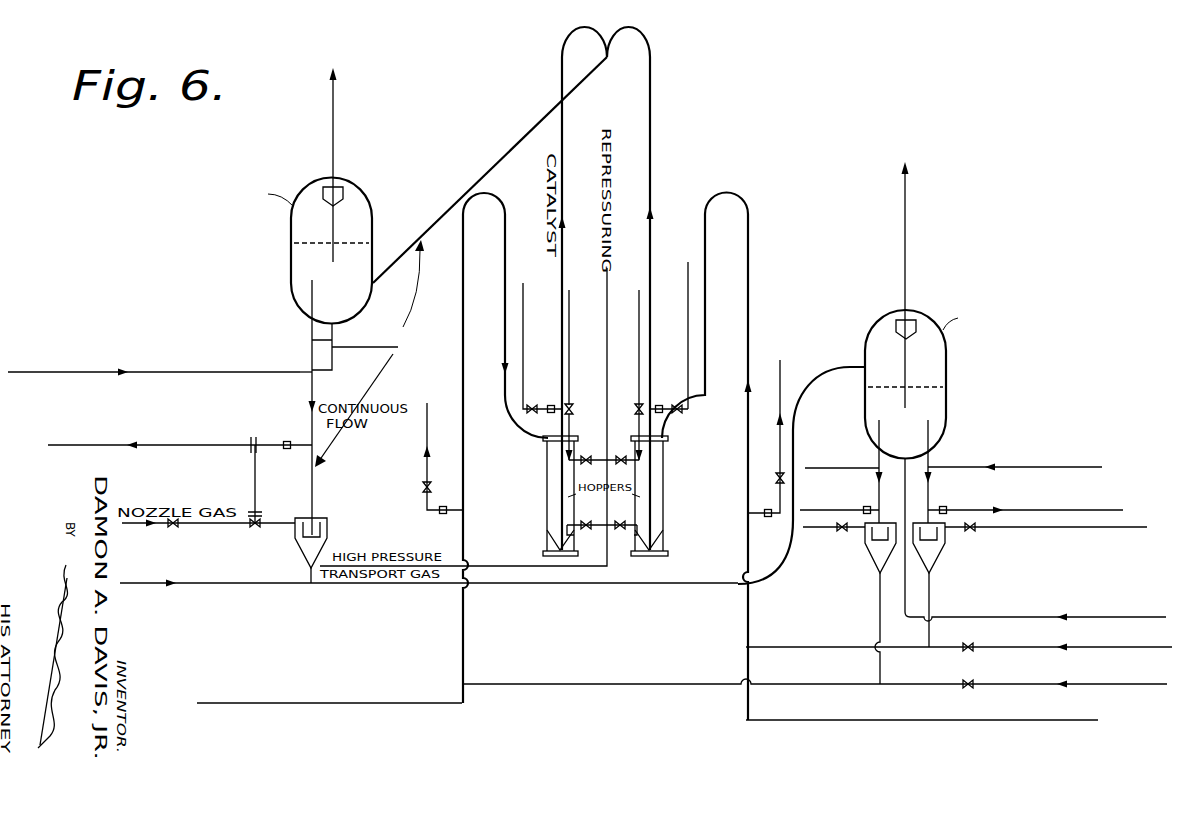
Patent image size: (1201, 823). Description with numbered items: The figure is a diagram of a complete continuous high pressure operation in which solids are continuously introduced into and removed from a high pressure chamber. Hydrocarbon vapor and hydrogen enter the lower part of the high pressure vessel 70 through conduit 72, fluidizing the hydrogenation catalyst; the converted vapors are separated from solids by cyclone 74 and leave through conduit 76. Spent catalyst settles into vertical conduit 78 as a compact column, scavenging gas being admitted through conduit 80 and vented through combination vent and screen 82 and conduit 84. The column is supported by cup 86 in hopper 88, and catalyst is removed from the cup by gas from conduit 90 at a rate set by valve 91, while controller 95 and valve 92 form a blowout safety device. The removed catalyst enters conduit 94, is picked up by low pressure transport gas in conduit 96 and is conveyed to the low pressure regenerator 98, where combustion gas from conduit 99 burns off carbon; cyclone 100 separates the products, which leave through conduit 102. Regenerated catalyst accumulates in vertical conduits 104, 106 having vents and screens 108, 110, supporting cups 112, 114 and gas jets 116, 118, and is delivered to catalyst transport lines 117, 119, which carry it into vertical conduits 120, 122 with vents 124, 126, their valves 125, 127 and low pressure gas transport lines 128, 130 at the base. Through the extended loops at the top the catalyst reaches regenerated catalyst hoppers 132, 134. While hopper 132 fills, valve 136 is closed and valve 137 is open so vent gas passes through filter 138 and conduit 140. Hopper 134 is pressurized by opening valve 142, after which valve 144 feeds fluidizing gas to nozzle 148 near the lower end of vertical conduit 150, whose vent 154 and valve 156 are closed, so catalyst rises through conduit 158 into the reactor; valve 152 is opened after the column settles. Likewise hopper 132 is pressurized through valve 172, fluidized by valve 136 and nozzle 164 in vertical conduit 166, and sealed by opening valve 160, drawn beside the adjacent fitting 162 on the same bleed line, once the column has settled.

The high pressure vessel 70 is at (291, 221).
The conduit 72 is at (204, 374).
The cyclone 74 is at (343, 195).
The conduit 76 is at (334, 131).
The vertical conduit 78 is at (313, 374).
The conduit 80 is at (399, 349).
The combination vent and screen 82 is at (278, 460).
The conduit 84 is at (176, 447).
The cup 86 is at (327, 524).
The hopper 88 is at (298, 551).
The conduit 90 is at (271, 521).
The valve 91 is at (170, 528).
The valve 92 is at (251, 528).
The conduit 94 is at (300, 575).
The controller 95 is at (256, 437).
The conduit 96 is at (429, 594).
The low pressure regenerator 98 is at (947, 356).
The conduit 99 is at (908, 466).
The cyclone 100 is at (908, 318).
The conduit 102 is at (906, 230).
The vertical conduit 104 is at (877, 452).
The vertical conduit 106 is at (931, 452).
The vent and screen 108 is at (874, 505).
The vent and screen 110 is at (946, 506).
The supporting cup 112 is at (866, 548).
The supporting cup 114 is at (944, 548).
The gas jet 116 is at (848, 525).
The catalyst transport line 117 is at (690, 686).
The gas jet 118 is at (1046, 525).
The catalyst transport line 119 is at (846, 648).
The vertical conduit 120 is at (463, 300).
The vertical conduit 122 is at (750, 208).
The vent and solid removal device 124 is at (440, 516).
The valve 125 is at (423, 486).
The vent and solid removal device 126 is at (768, 517).
The valve 127 is at (776, 478).
The low pressure gas transport line 128 is at (378, 703).
The low pressure gas transport line 130 is at (900, 720).
The regenerated catalyst hopper 132 is at (547, 515).
The regenerated catalyst hopper 134 is at (664, 495).
The valve 136 is at (586, 520).
The valve 137 is at (572, 404).
The filter 138 is at (571, 420).
The conduit 140 is at (570, 373).
The valve 142 is at (616, 465).
The valve 144 is at (618, 521).
The nozzle 148 is at (636, 533).
The vertical conduit 150 is at (653, 100).
The valve 152 is at (636, 404).
The vent 154 is at (659, 404).
The valve 156 is at (677, 414).
The conduit 158 is at (599, 72).
The valve 160 is at (533, 404).
The bleed gas valve 162 is at (551, 413).
The nozzle 164 is at (574, 533).
The vertical conduit 166 is at (564, 112).
The valve 172 is at (604, 453).